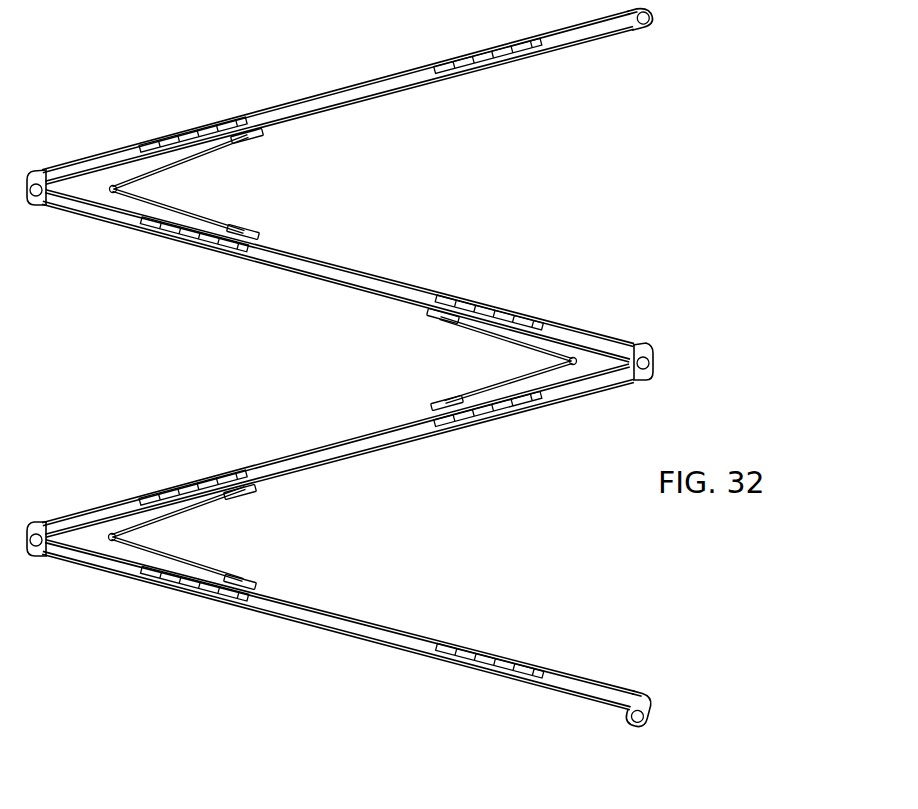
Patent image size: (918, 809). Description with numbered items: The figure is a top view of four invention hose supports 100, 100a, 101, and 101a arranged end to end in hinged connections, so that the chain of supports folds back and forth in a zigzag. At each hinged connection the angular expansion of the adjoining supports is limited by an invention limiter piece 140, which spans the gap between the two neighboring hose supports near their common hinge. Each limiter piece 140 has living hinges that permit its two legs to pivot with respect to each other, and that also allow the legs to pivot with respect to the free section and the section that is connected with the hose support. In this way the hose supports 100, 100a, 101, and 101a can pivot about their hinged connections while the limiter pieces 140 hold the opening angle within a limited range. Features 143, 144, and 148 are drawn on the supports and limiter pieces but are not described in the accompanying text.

The hose support 100 is at (347, 80).
The hose support 100a is at (367, 270).
The hose support 101 is at (334, 440).
The hose support 101a is at (398, 622).
The limiter piece 140 is at (192, 187).
The pivot pin 143 is at (115, 182).
The rack slots on rail 144 is at (222, 137).
The strut clip / connector 148 is at (250, 134).